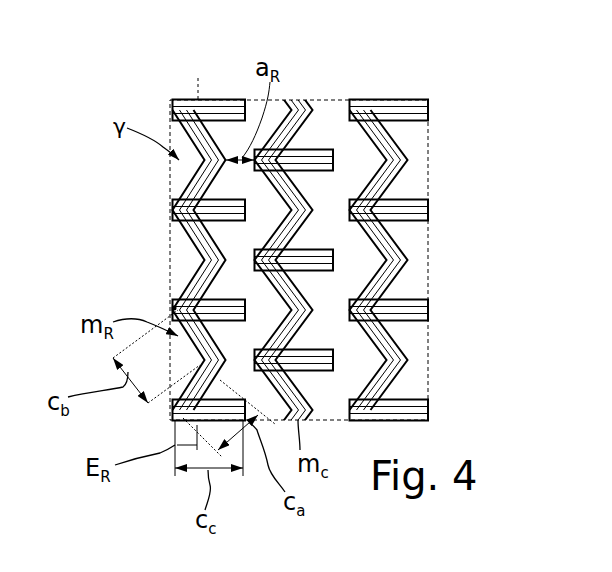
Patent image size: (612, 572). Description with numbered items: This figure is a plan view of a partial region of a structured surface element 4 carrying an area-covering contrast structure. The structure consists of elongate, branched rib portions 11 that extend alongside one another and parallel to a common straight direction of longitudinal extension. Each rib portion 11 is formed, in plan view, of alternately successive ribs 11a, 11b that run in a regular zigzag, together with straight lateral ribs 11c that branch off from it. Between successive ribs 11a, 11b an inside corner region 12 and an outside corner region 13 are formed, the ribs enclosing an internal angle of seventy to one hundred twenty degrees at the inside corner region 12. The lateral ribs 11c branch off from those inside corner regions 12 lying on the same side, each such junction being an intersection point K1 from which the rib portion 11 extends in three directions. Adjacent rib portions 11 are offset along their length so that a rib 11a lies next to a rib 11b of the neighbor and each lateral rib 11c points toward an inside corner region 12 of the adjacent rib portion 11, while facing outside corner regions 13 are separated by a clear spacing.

The structured surface element 4 is at (399, 92).
The rib portion 11 is at (205, 94).
The rib 11a is at (186, 176).
The rib 11b is at (188, 240).
The lateral rib 11c is at (245, 202).
The inside corner region 12 is at (199, 260).
The outside corner region 13 is at (232, 256).
The intersection point K1 is at (170, 302).